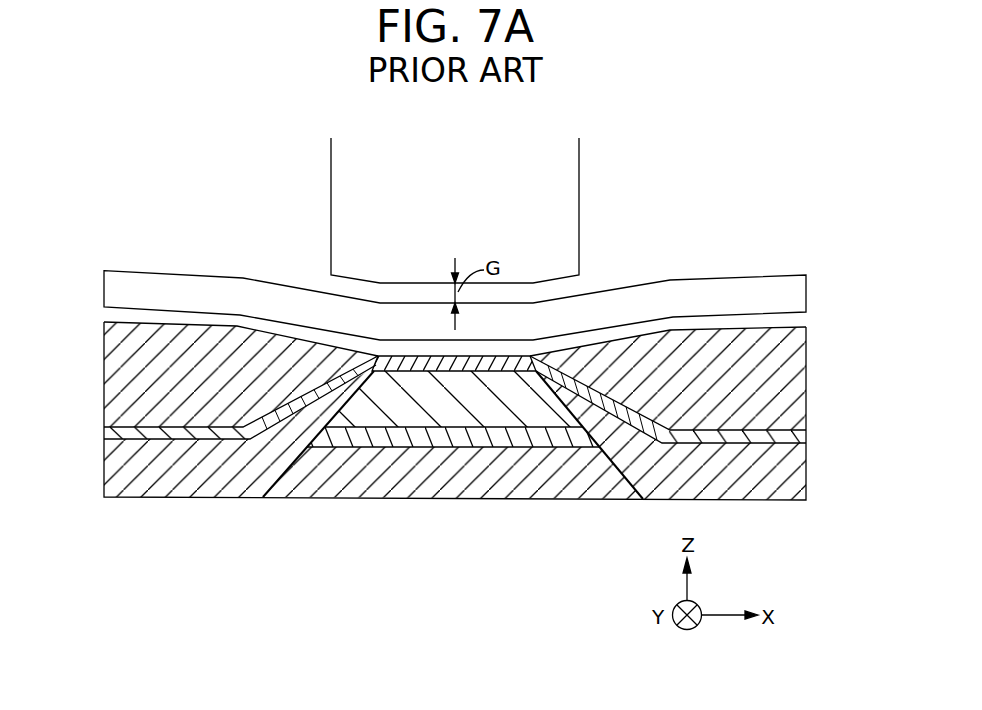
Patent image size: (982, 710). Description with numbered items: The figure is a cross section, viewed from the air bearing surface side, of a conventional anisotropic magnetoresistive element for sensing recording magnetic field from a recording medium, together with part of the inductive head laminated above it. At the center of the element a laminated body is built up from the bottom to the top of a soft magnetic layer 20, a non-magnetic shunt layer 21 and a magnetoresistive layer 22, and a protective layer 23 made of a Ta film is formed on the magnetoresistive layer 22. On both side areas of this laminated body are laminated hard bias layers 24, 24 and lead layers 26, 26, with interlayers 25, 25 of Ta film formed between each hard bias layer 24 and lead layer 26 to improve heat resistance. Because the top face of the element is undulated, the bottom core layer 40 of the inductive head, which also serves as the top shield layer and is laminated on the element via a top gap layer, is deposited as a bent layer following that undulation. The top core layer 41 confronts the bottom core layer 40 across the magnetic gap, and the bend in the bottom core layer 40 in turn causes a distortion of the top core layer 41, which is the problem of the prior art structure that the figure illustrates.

The soft magnetic layer 20 is at (400, 492).
The non-magnetic layer 21 is at (513, 437).
The magnetoresistive layer 22 is at (343, 418).
The protective layer 23 is at (463, 367).
The hard bias layer 24 is at (124, 474).
The interlayer 25 is at (124, 436).
The lead layer 26 is at (124, 383).
The bottom core layer 40 is at (743, 283).
The top core layer 41 is at (553, 201).